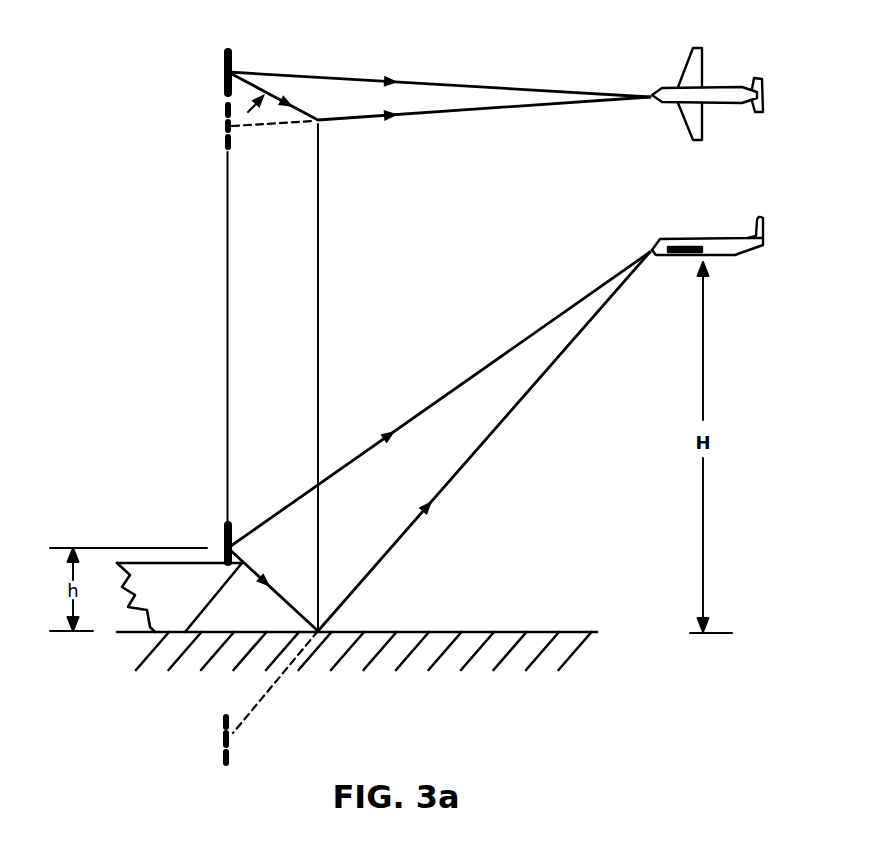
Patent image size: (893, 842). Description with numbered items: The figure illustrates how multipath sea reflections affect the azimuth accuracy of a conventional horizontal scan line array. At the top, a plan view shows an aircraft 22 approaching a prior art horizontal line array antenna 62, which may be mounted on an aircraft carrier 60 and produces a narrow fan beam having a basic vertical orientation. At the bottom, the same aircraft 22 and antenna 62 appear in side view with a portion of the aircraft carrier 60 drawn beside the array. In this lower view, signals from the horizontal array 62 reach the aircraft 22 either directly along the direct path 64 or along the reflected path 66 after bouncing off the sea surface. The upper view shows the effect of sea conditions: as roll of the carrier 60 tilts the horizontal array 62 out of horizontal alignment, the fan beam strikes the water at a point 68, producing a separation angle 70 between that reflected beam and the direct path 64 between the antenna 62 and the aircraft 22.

The aircraft 22 is at (703, 70).
The aircraft carrier 60 is at (220, 592).
The horizontal line array antenna 62 is at (225, 65).
The direct path 64 is at (493, 358).
The reflected path 66 is at (488, 437).
The reflection point 68 is at (327, 123).
The separation angle 70 is at (267, 72).